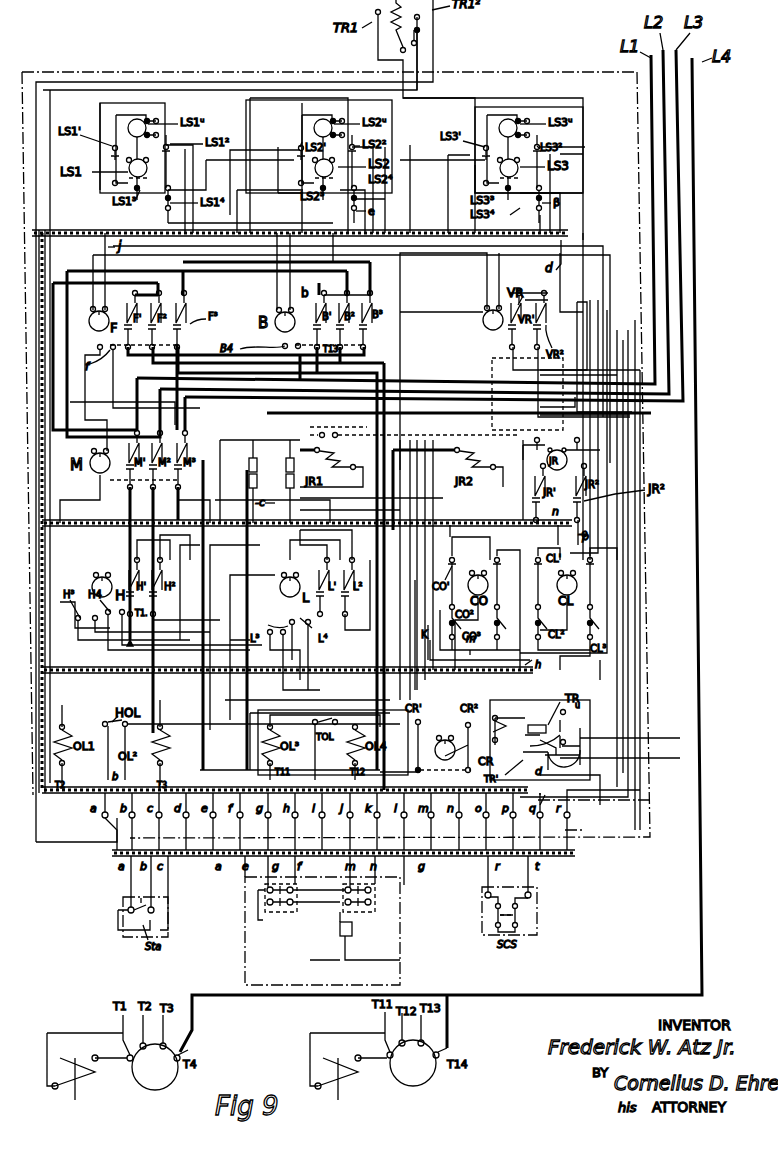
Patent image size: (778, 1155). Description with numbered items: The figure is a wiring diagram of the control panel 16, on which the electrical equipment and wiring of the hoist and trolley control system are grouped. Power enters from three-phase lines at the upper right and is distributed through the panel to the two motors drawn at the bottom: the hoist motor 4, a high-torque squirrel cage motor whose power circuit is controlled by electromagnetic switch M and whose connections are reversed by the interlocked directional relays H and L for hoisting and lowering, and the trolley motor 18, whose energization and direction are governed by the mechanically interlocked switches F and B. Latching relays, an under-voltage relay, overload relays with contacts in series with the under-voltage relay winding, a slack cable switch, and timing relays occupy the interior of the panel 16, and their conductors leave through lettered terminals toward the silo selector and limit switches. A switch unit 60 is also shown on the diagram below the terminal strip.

The hoist motor 4 is at (153, 1080).
The control panel 16 is at (470, 85).
The trolley motor 18 is at (428, 1072).
The switch unit 60 is at (343, 932).